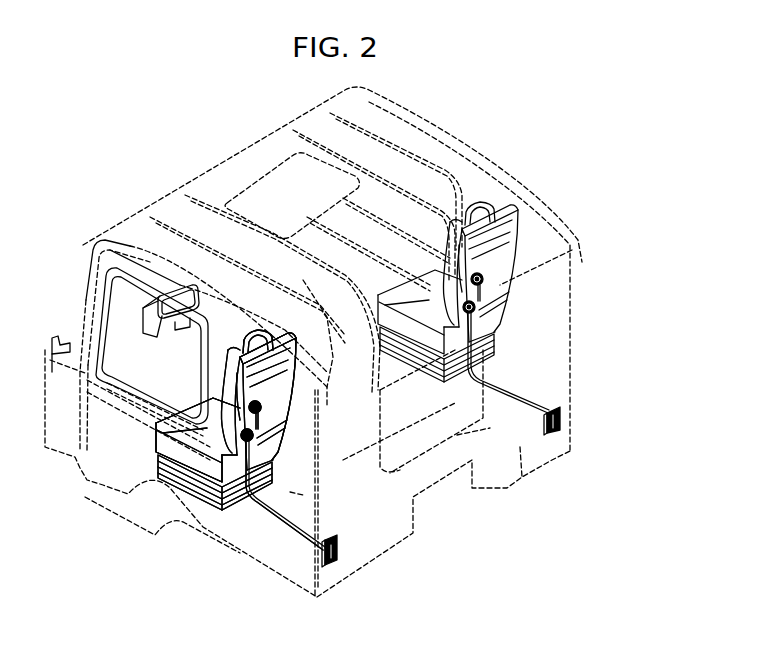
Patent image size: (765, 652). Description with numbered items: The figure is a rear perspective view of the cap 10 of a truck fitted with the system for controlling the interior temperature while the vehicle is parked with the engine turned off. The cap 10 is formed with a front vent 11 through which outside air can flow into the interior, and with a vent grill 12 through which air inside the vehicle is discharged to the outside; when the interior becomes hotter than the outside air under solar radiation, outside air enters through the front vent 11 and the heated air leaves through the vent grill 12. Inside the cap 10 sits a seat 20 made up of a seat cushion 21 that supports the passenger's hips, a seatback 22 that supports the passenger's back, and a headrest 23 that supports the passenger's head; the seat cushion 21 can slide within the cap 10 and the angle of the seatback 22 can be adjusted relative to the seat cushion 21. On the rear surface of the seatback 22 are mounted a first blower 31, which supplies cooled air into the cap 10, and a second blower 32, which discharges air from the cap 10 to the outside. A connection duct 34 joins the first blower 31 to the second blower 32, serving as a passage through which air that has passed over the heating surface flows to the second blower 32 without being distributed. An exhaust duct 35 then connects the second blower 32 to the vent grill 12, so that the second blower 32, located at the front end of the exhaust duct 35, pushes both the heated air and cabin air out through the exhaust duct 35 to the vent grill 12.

The cap 10 is at (515, 178).
The front vent 11 is at (182, 289).
The vent grill 12 is at (338, 553).
The seat 20 is at (172, 392).
The seat cushion 21 is at (190, 432).
The seatback 22 is at (232, 385).
The headrest 23 is at (265, 328).
The first blower 31 is at (262, 410).
The second blower 32 is at (270, 445).
The connection duct 34 is at (255, 441).
The exhaust duct 35 is at (277, 527).